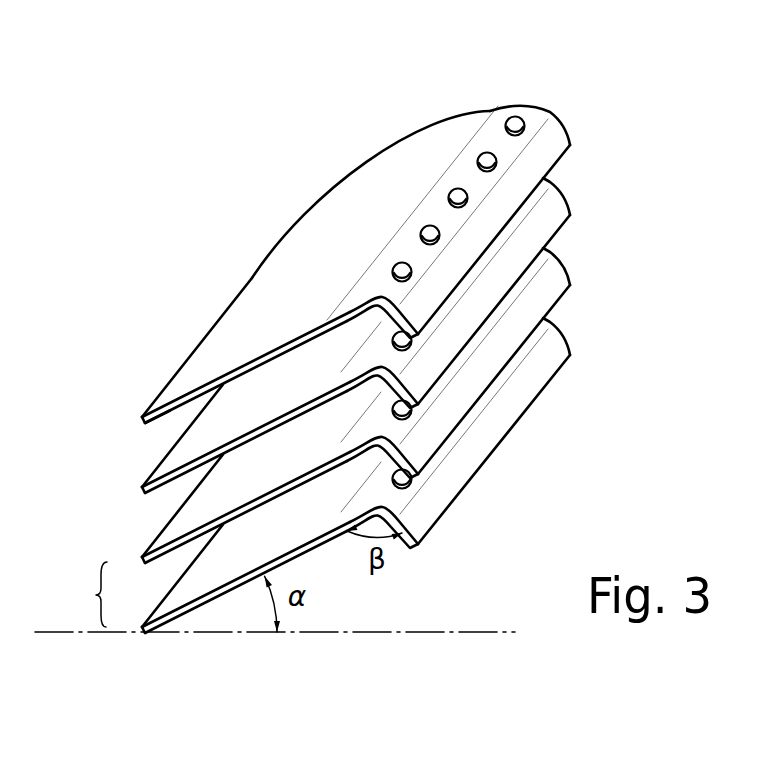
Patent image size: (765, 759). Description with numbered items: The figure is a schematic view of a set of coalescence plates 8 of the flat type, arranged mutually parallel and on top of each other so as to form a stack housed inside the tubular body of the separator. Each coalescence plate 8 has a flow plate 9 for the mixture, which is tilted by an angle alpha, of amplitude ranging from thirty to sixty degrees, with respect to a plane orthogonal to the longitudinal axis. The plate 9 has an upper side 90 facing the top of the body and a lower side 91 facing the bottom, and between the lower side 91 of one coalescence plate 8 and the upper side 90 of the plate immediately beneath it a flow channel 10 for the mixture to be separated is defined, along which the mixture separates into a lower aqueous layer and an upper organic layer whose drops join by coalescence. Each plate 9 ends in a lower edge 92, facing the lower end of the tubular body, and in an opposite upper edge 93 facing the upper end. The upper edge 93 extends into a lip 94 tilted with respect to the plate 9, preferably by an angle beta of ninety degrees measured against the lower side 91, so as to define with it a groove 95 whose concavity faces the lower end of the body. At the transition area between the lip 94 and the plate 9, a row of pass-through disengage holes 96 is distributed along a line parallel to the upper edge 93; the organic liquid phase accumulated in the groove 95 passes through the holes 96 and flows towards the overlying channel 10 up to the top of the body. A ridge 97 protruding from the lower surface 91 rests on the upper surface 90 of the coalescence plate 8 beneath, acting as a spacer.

The coalescence plate 8 is at (298, 205).
The flow plate 9 is at (185, 508).
The flow channel 10 is at (82, 594).
The upper side 90 is at (350, 325).
The lower side 91 is at (163, 418).
The lower edge 92 is at (140, 416).
The upper edge 93 is at (497, 113).
The lip 94 is at (405, 325).
The groove 95 is at (405, 368).
The pass-through disengage hole 96 is at (461, 201).
The ridge 97 is at (435, 125).